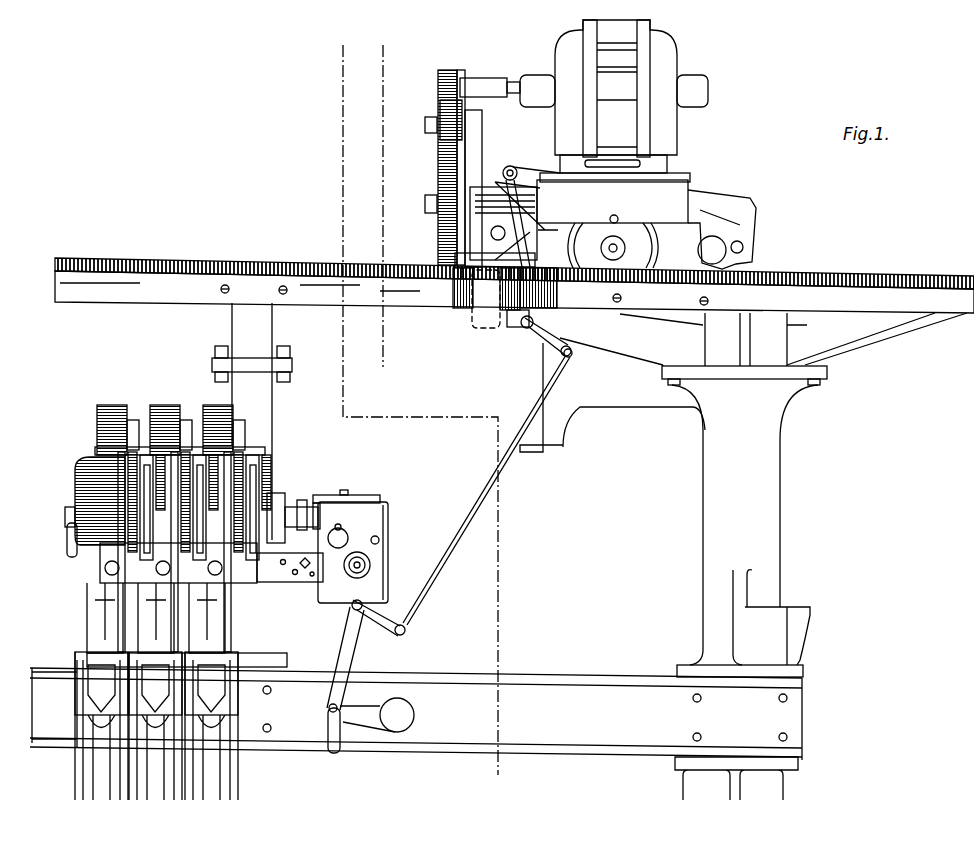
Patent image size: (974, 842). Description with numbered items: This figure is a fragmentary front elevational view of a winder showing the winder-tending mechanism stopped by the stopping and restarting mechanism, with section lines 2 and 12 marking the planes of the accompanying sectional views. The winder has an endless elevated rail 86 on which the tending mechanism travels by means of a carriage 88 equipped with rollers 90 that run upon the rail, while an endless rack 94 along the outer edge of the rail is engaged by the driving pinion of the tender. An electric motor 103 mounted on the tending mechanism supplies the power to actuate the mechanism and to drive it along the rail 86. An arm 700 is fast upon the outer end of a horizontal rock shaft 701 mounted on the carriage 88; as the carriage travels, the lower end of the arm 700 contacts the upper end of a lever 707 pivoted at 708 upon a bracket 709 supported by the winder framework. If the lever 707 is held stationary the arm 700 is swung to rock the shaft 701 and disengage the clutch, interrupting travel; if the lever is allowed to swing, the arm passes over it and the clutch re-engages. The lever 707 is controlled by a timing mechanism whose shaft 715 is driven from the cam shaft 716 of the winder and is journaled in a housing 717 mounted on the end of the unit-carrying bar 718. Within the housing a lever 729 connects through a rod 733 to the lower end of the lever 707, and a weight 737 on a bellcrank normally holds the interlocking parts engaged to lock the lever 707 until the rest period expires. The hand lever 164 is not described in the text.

The section line 2— 2 is at (483, 776).
The section line 12— 12 is at (395, 371).
The endless elevated rail 86 is at (838, 272).
The endless rack 94 is at (915, 275).
The electric motor 103 is at (665, 66).
The carriage 88 is at (579, 224).
The rollers 90 is at (746, 240).
The horizontal rock shaft 701 is at (515, 166).
The arm 700 is at (535, 232).
The bracket 709 is at (470, 320).
The lever 707 is at (507, 317).
The pivot 708 is at (525, 333).
The rod 733 is at (468, 528).
The cam shaft 716 is at (95, 465).
The housing 717 is at (390, 526).
The shaft 715 is at (320, 502).
The unit-carrying bar 718 is at (302, 583).
The lever 729 is at (380, 622).
The lever 164 is at (322, 753).
The weight 737 is at (400, 715).